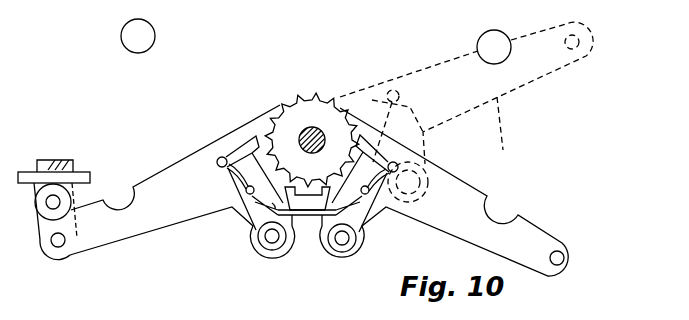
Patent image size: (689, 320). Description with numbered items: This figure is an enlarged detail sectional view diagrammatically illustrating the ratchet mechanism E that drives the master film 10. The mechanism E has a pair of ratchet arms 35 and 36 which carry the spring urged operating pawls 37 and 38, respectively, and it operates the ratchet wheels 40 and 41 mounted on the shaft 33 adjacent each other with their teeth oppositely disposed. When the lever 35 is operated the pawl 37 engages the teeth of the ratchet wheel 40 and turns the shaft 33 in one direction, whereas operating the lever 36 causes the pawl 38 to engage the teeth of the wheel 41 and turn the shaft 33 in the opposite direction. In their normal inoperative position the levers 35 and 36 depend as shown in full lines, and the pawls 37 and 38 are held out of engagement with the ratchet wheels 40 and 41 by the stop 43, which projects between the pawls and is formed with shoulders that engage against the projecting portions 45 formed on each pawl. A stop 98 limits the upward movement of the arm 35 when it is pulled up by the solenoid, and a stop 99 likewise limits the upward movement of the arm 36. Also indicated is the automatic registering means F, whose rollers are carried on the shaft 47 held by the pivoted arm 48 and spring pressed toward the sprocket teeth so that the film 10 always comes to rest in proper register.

The master film 10 is at (218, 0).
The shaft 33 is at (306, 134).
The ratchet arm 35 is at (453, 190).
The ratchet arm 36 is at (177, 208).
The operating pawl 37 is at (386, 210).
The operating pawl 38 is at (249, 188).
The ratchet wheel 40 is at (340, 100).
The ratchet wheel 41 is at (290, 97).
The stop 43 is at (54, 240).
The projecting portion 45 is at (272, 204).
The shaft 47 is at (388, 0).
The arm 48 is at (398, 20).
The stop 98 is at (496, 43).
The stop 99 is at (148, 48).
The ratchet mechanism E is at (327, 96).
The automatic registering means F is at (363, 6).